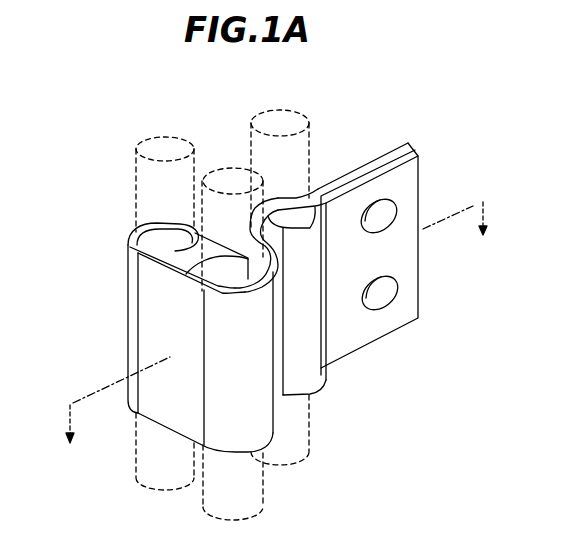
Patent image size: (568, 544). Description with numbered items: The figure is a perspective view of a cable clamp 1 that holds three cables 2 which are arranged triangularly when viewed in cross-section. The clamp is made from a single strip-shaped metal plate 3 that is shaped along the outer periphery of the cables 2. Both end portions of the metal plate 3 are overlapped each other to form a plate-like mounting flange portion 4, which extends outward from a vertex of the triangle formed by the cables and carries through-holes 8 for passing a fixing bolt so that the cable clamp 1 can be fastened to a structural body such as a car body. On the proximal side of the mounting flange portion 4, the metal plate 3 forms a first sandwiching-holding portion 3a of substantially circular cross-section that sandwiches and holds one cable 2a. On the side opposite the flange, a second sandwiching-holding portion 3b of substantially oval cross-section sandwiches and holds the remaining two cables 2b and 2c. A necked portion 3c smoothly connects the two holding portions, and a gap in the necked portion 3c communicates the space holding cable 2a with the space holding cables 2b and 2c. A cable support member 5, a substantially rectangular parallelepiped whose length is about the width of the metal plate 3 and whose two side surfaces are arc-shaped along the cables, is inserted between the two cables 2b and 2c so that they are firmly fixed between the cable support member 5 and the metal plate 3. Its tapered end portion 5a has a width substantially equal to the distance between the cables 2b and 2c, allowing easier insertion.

The cable clamp 1 is at (516, 117).
The cables 2 is at (308, 118).
The cable 2a is at (278, 110).
The cable 2b is at (167, 136).
The cable 2c is at (234, 168).
The metal plate 3 is at (258, 413).
The first sandwiching-holding portion 3a is at (318, 372).
The second sandwiching-holding portion 3b is at (178, 412).
The necked portion 3c is at (250, 222).
The mounting flange portion 4 is at (407, 313).
The cable support member 5 is at (134, 243).
The end portion 5a is at (162, 249).
The through-holes 8 is at (388, 198).